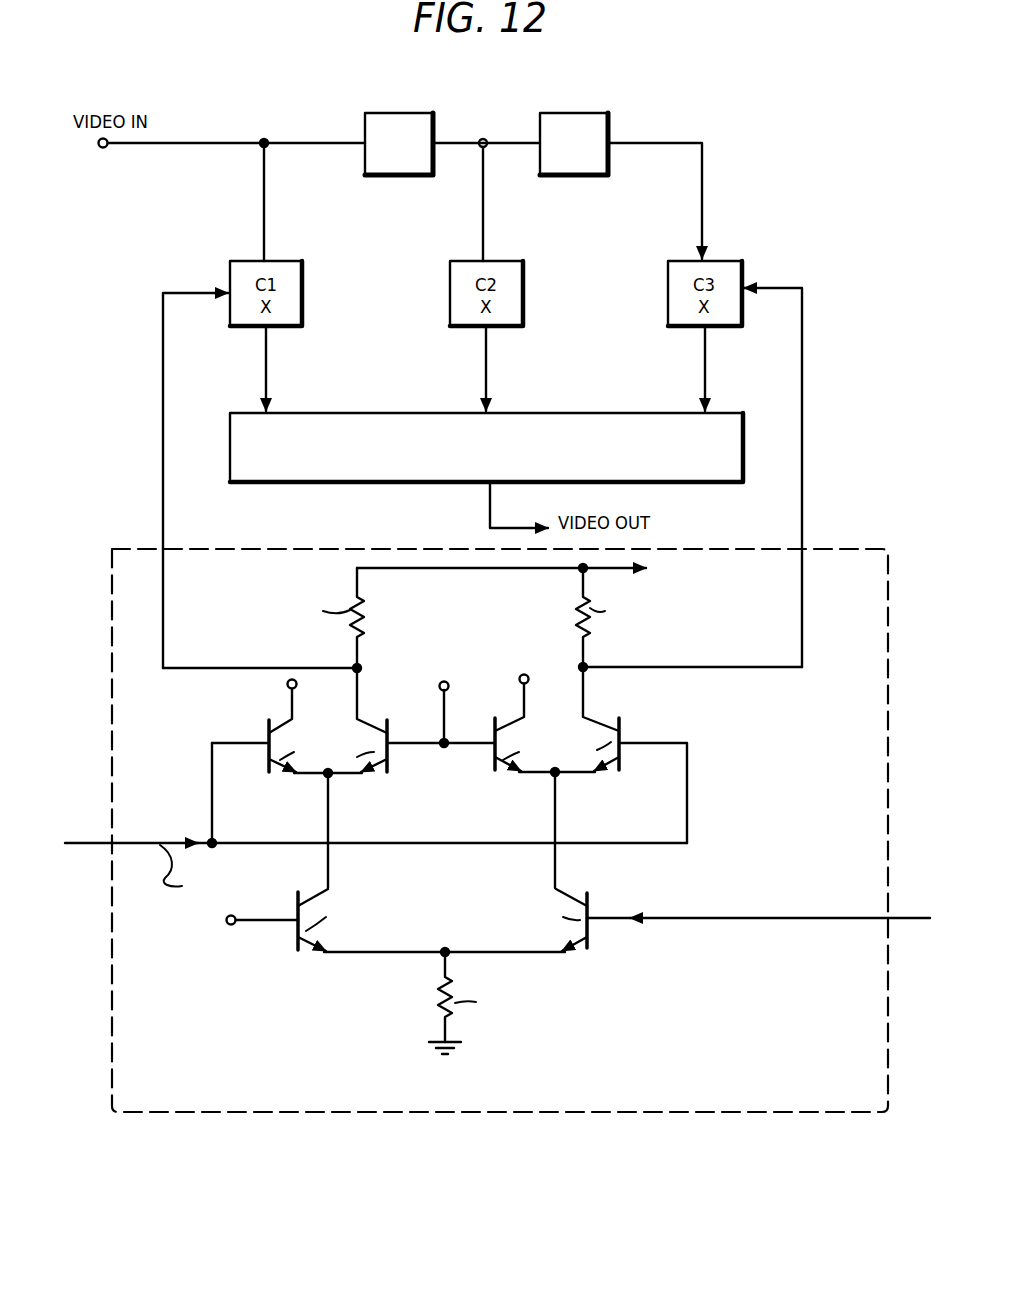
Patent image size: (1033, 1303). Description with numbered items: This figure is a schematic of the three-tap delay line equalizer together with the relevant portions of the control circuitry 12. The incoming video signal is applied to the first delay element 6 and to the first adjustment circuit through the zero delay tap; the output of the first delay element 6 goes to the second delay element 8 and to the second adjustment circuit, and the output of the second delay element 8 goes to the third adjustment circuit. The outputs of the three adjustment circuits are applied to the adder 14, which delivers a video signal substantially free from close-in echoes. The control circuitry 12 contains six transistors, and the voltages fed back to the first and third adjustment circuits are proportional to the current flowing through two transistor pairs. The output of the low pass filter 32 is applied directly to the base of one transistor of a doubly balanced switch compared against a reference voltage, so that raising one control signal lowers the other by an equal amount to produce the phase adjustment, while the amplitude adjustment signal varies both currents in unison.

The delay element 6 is at (406, 113).
The delay element 8 is at (591, 113).
The control circuitry 12 is at (868, 549).
The adder 14 is at (230, 451).
The low pass filter 32 is at (758, 907).